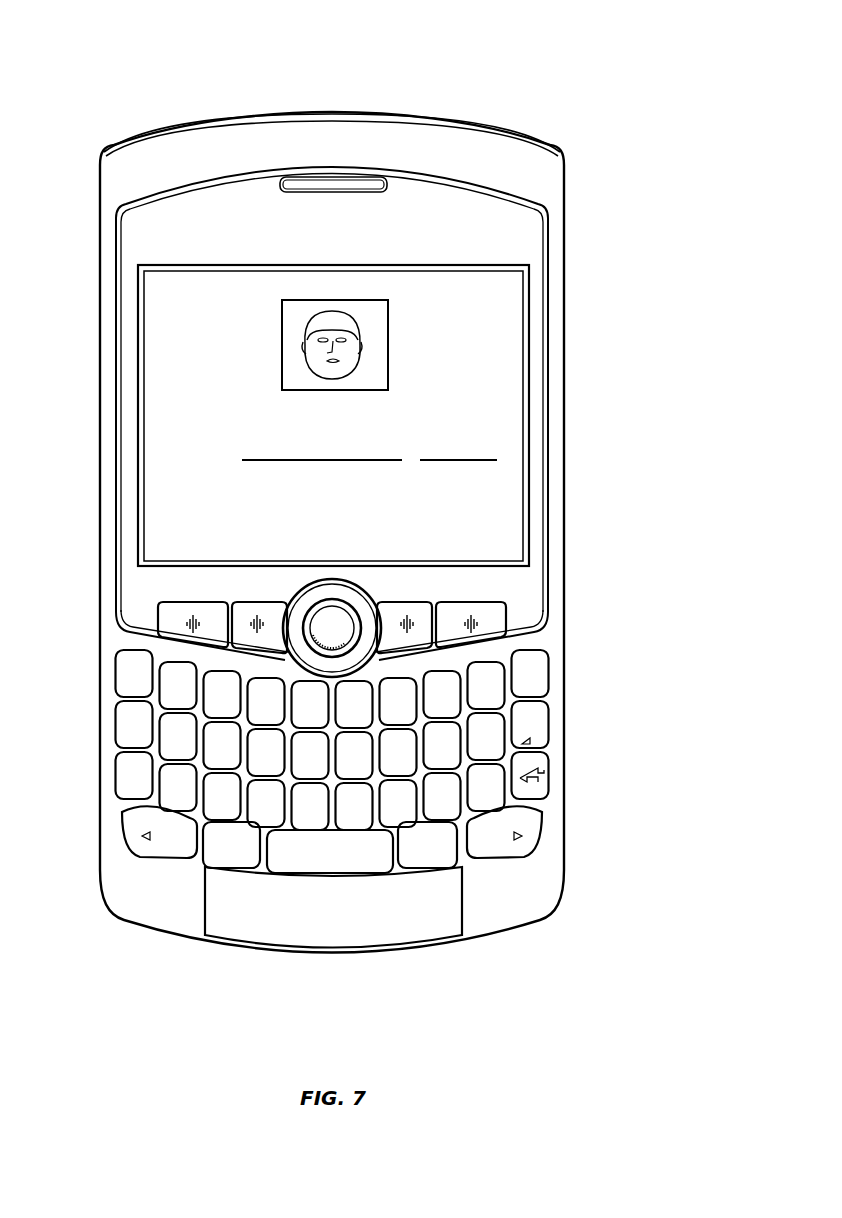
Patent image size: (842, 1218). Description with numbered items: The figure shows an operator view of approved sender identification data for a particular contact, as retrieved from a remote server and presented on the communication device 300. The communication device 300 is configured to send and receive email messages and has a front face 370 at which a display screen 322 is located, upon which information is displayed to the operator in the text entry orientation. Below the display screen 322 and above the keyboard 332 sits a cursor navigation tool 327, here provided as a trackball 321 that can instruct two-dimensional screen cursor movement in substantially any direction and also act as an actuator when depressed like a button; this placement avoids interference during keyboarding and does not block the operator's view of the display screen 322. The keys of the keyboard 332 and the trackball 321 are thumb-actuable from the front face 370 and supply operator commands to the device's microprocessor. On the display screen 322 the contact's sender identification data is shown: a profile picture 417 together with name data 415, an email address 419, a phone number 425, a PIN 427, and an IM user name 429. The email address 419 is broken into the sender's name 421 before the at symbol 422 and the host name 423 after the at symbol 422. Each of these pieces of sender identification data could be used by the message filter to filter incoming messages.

The communication device 300 is at (504, 51).
The display screen 322 is at (252, 294).
The profile picture 417 is at (393, 347).
The name data 415 is at (408, 417).
The email address 419 is at (503, 444).
The sender's name 421 is at (403, 463).
The at symbol 422 is at (414, 434).
The host name 423 is at (475, 462).
The phone number 425 is at (406, 478).
The PIN 427 is at (314, 503).
The IM user name 429 is at (317, 532).
The trackball 321 is at (341, 629).
The cursor navigation tool 327 is at (296, 659).
The keyboard 332 is at (536, 838).
The front face 370 is at (554, 772).